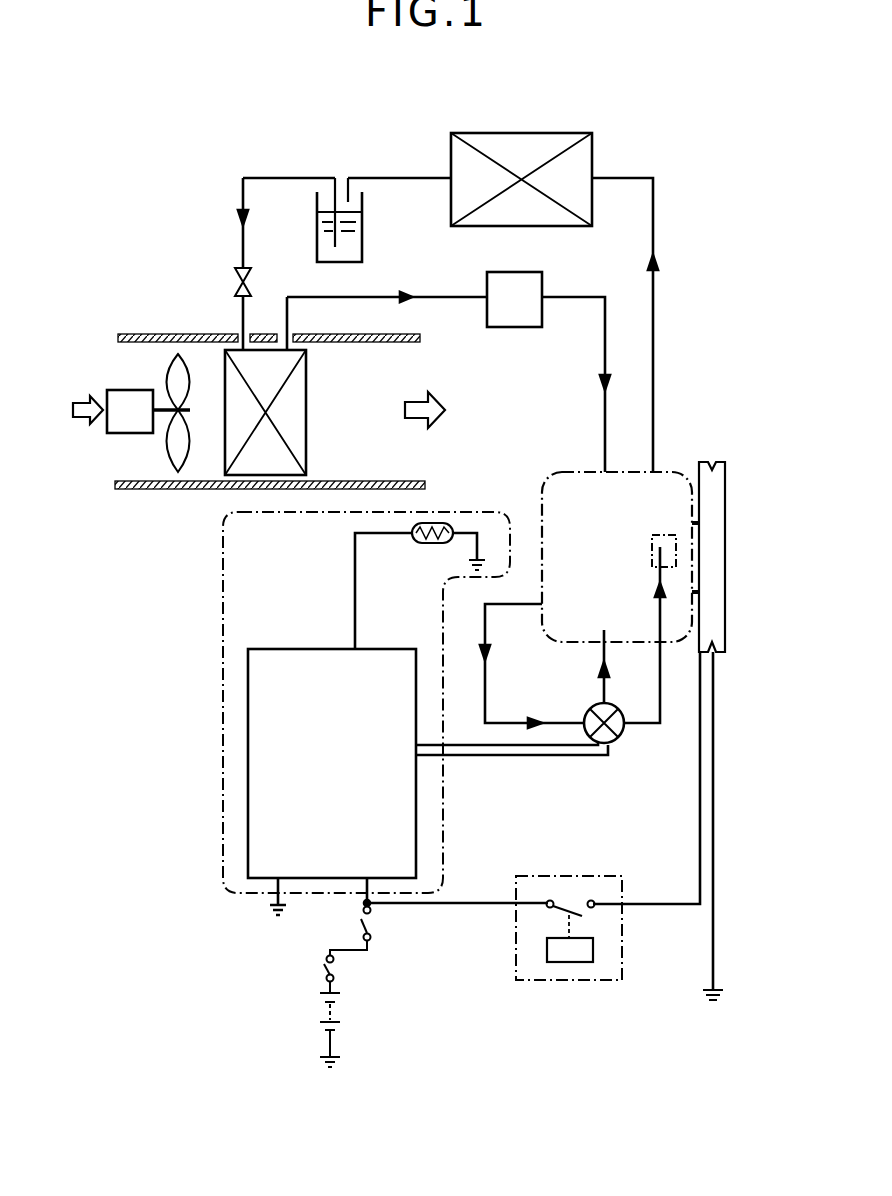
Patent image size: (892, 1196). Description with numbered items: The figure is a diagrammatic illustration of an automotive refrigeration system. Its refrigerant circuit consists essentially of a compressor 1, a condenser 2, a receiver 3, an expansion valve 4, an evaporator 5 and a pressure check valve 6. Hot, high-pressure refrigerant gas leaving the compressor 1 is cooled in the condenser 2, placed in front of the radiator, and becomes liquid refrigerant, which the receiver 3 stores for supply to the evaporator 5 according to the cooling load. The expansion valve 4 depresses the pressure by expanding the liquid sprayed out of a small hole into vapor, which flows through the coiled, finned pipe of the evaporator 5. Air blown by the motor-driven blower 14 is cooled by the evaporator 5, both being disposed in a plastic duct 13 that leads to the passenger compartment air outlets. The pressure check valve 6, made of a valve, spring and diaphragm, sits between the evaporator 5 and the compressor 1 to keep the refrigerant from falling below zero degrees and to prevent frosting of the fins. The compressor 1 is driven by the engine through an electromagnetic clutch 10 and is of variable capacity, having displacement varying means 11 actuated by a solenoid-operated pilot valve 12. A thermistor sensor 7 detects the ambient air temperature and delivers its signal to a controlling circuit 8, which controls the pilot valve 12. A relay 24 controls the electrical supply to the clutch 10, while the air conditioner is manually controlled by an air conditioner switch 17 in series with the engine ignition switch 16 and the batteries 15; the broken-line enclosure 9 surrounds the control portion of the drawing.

The compressor 1 is at (570, 494).
The condenser 2 is at (533, 153).
The receiver 3 is at (350, 243).
The expansion valve 4 is at (240, 282).
The evaporator 5 is at (256, 468).
The pressure check valve 6 is at (515, 283).
The sensor 7 is at (440, 531).
The controlling circuit 8 is at (386, 672).
The control device 9 is at (242, 588).
The electromagnetic clutch 10 is at (698, 465).
The displacement varying means 11 is at (652, 556).
The solenoid-operated pilot valve 12 is at (600, 706).
The plastic duct 13 is at (370, 331).
The motor-driven blower 14 is at (181, 338).
The batteries 15 is at (326, 1005).
The engine ignition switch 16 is at (326, 977).
The air conditioner switch 17 is at (370, 924).
The relay 24 is at (570, 982).